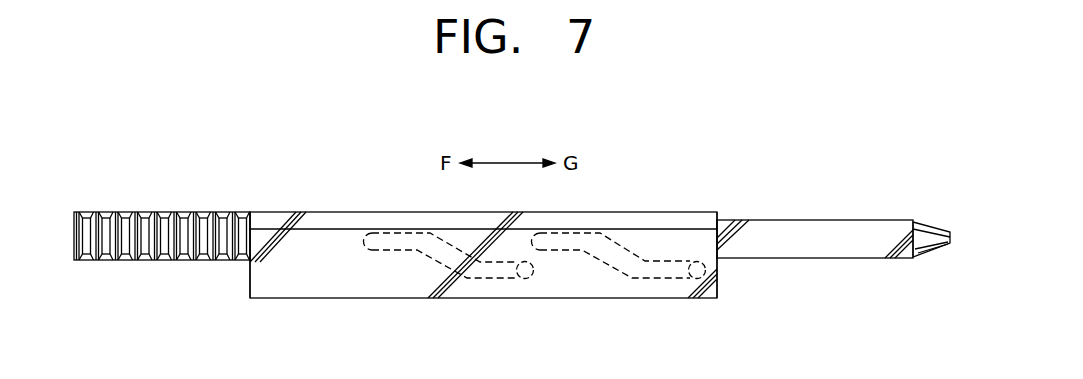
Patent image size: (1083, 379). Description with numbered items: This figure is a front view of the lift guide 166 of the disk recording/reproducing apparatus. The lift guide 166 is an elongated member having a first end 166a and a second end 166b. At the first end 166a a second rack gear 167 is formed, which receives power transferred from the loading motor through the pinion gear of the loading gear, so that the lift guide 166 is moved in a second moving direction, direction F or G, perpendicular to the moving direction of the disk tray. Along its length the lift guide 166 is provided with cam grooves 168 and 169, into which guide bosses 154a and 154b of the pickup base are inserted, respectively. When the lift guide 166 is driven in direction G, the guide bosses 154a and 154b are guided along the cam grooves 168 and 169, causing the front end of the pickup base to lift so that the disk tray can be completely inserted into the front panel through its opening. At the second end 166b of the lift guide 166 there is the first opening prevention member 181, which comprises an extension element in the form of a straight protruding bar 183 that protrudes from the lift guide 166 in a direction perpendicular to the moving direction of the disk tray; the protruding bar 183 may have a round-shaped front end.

The lift guide 166 is at (316, 211).
The first end 166a is at (250, 285).
The second end 166b is at (717, 285).
The second rack gear 167 is at (146, 258).
The cam groove 168 is at (403, 251).
The cam groove 169 is at (580, 250).
The guide boss 154a is at (685, 268).
The guide boss 154b is at (520, 268).
The first opening prevention member 181 is at (781, 212).
The protruding bar 183 is at (858, 220).